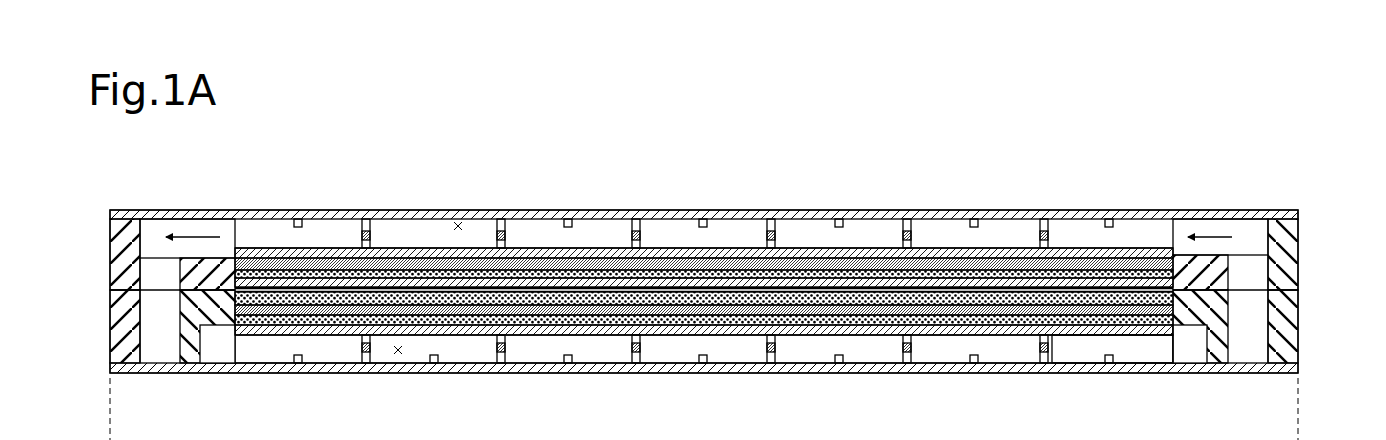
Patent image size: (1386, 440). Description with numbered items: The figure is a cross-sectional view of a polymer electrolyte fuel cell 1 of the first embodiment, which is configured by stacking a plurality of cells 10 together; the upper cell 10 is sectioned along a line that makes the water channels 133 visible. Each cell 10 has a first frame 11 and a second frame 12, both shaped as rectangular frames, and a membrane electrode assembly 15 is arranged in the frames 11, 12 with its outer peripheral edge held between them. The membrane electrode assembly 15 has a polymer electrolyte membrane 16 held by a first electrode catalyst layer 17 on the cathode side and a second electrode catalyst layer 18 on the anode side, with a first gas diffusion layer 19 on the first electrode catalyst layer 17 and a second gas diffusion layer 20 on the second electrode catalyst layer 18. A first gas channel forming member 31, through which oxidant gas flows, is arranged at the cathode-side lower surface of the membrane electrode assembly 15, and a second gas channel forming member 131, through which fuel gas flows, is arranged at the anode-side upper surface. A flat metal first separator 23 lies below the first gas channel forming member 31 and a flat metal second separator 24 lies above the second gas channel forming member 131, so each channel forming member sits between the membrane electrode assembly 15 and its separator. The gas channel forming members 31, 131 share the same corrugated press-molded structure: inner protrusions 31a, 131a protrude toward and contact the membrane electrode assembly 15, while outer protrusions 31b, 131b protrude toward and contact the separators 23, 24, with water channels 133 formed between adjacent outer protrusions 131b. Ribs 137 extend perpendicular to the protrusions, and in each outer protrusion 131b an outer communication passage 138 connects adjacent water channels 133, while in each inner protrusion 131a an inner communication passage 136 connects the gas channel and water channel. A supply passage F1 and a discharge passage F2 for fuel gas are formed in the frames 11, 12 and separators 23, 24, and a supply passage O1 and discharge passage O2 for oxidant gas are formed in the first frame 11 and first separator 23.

The fuel cell 1 is at (721, 130).
The cell 10 is at (1338, 212).
The first frame 11 is at (1302, 334).
The second frame 12 is at (1302, 216).
The membrane electrode assembly 15 is at (704, 231).
The polymer electrolyte membrane 16 is at (927, 282).
The first electrode catalyst layer 17 is at (880, 292).
The second electrode catalyst layer 18 is at (962, 259).
The first gas diffusion layer 19 is at (1015, 168).
The second gas diffusion layer 20 is at (996, 252).
The first separator 23 is at (771, 375).
The second separator 24 is at (754, 208).
The first gas channel forming member 31 is at (1066, 346).
The inner protrusion 31a is at (528, 334).
The outer protrusion 31b is at (841, 366).
The second gas channel forming member 131 is at (1112, 191).
The inner protrusion 131a is at (546, 247).
The outer protrusion 131b is at (250, 210).
The water channel 133 is at (459, 223).
The inner communication passage 136 is at (363, 235).
The rib 137 is at (370, 229).
The outer communication passage 138 is at (297, 218).
The supply passage F1 is at (1240, 234).
The discharge passage F2 is at (158, 238).
The supply passage O1 is at (217, 346).
The discharge passage O2 is at (1190, 344).